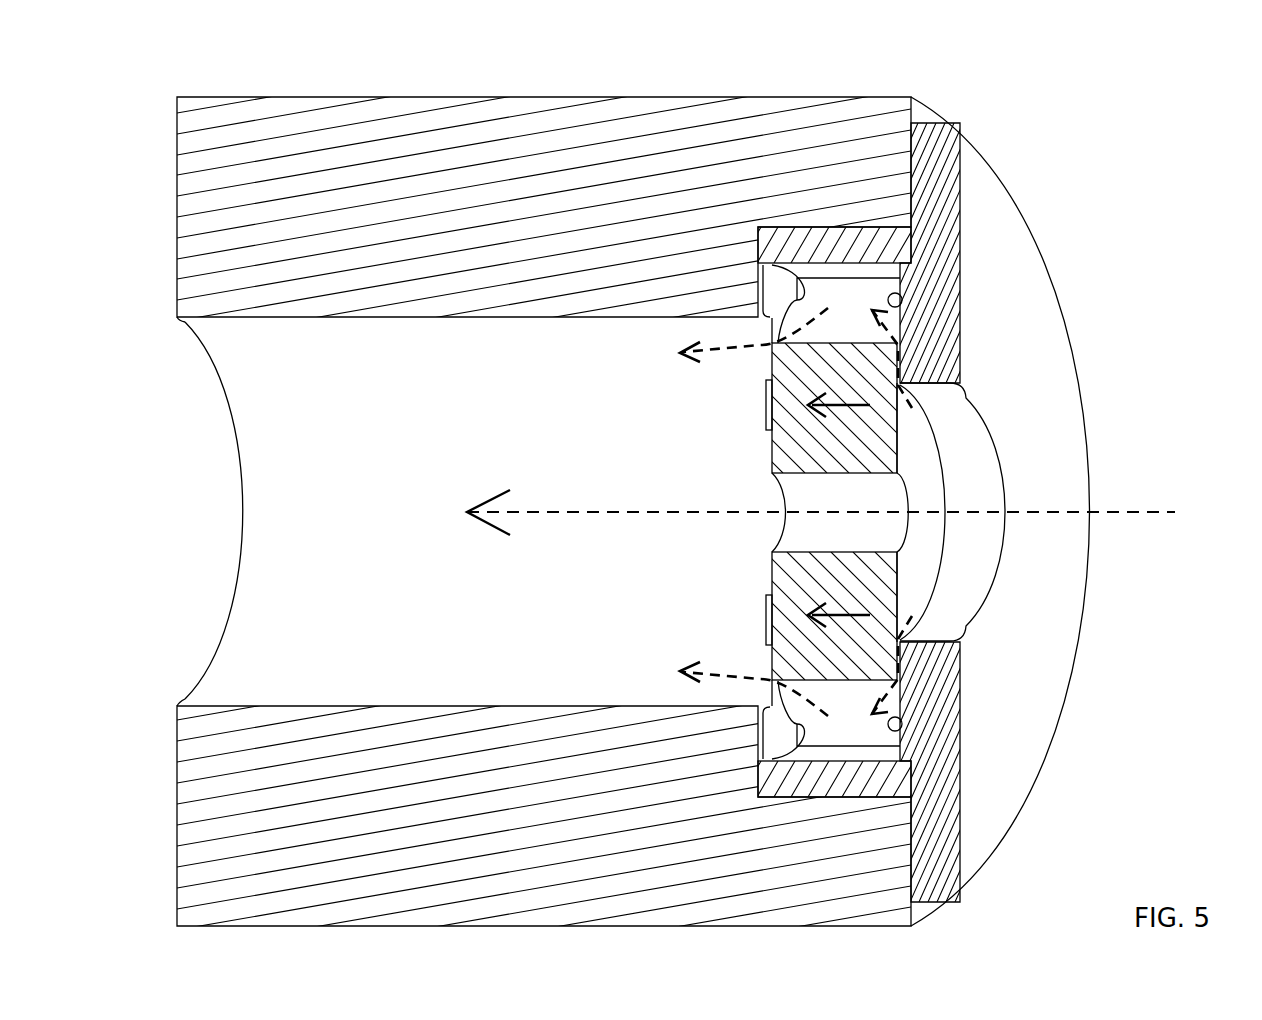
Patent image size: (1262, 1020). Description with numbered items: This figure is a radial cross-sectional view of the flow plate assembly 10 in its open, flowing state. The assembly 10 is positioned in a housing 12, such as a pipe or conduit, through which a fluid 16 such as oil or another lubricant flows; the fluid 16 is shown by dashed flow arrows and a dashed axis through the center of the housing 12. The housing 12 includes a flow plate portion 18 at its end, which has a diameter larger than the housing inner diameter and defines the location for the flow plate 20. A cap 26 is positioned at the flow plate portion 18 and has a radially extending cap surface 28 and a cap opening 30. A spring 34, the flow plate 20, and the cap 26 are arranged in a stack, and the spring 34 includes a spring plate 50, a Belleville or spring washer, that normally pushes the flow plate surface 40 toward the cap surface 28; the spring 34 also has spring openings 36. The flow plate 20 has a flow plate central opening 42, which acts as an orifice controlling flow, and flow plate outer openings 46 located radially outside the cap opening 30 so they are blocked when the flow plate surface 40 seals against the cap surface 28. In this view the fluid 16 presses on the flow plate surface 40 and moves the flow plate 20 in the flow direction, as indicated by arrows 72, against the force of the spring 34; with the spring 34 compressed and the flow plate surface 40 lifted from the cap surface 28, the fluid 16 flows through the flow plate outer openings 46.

The flow plate assembly 10 is at (1102, 92).
The housing 12 is at (746, 120).
The fluid 16 is at (730, 365).
The flow plate portion 18 is at (822, 845).
The flow plate 20 is at (870, 660).
The cap 26 is at (1010, 215).
The cap surface 28 is at (900, 302).
The cap opening 30 is at (998, 588).
The spring 34 is at (765, 268).
The spring openings 36 is at (760, 290).
The flow plate surface 40 is at (915, 440).
The flow plate central opening 42 is at (778, 530).
The flow plate outer openings 46 is at (855, 285).
The spring plate 50 is at (765, 768).
The arrows 72 is at (850, 395).